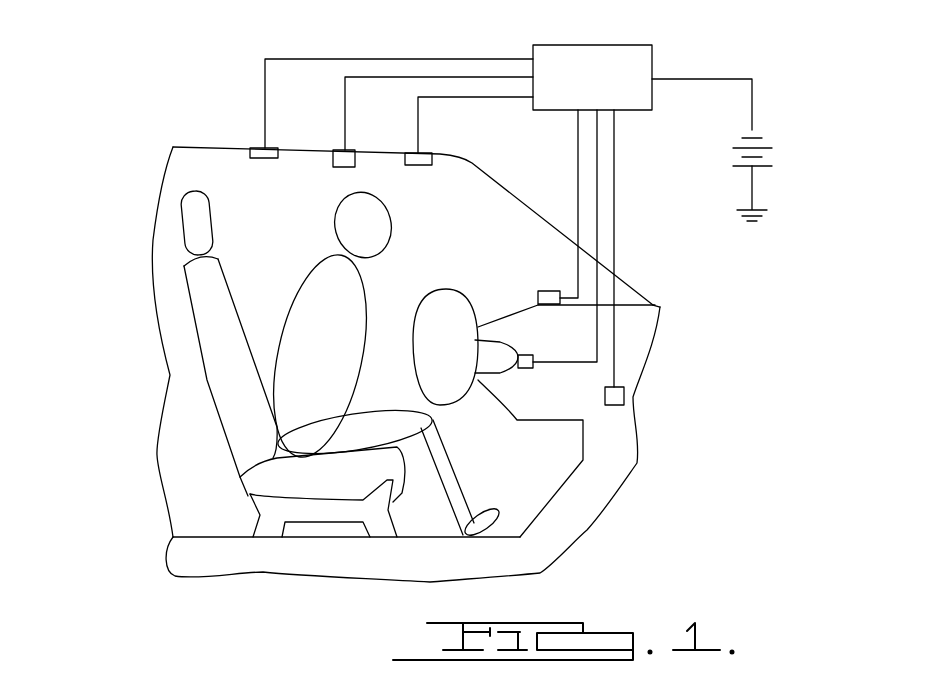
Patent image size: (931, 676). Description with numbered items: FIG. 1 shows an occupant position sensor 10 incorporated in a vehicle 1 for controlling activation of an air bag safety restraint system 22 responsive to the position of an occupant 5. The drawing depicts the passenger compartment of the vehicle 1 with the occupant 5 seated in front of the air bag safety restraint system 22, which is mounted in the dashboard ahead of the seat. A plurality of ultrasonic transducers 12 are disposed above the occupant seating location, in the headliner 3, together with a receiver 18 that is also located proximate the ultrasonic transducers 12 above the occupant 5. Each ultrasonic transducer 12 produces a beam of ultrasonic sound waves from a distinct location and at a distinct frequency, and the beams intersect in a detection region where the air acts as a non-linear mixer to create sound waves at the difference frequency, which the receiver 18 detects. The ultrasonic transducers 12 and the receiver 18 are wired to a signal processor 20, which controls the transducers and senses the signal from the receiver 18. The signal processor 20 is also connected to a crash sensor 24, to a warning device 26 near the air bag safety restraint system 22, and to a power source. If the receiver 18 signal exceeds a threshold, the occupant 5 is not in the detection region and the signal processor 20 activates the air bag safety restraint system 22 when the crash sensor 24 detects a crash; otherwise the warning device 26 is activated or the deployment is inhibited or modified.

The vehicle 1 is at (655, 306).
The headliner 3 is at (188, 172).
The occupant 5 is at (340, 237).
The occupant position sensor 10 is at (141, 119).
The ultrasonic transducers 12 is at (258, 147).
The receiver 18 is at (338, 170).
The signal processor 20 is at (652, 56).
The air bag safety restraint system 22 is at (480, 404).
The crash sensor 24 is at (626, 398).
The warning device 26 is at (538, 294).